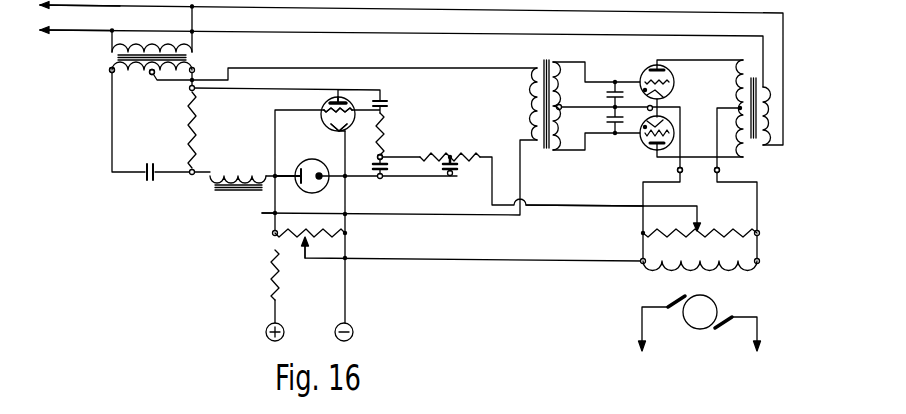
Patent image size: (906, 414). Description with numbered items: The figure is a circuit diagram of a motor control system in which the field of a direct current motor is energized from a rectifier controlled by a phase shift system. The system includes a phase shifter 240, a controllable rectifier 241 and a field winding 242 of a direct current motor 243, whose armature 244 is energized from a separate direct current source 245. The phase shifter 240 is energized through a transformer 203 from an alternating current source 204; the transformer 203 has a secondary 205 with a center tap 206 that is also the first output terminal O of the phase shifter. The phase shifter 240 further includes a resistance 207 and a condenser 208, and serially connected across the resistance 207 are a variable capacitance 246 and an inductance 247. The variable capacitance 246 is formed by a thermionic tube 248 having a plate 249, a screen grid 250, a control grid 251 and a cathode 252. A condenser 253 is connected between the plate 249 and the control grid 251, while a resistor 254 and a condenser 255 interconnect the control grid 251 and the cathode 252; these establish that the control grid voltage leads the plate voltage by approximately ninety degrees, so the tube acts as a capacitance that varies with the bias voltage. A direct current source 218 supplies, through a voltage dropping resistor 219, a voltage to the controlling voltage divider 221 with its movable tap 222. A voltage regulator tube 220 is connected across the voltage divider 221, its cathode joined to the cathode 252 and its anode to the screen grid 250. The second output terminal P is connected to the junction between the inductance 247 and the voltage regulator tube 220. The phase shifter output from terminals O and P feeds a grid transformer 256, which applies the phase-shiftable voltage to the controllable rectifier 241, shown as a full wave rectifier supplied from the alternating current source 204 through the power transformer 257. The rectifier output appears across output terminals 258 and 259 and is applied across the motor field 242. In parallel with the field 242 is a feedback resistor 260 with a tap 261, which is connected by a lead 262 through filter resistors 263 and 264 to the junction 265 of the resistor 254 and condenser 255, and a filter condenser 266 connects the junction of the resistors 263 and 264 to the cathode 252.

The alternating current source 204 is at (77, 18).
The transformer 203 is at (211, 45).
The secondary 205 is at (110, 73).
The center tap 206 is at (152, 74).
The phase shifter 240 is at (152, 89).
The resistance 207 is at (196, 110).
The condenser 208 is at (136, 183).
The inductance 247 is at (232, 193).
The second output terminal P is at (260, 208).
The voltage regulator tube 220 is at (321, 160).
The controlling voltage divider 221 is at (272, 237).
The movable tap 222 is at (302, 250).
The voltage dropping resistor 219 is at (272, 284).
The direct current source 218 is at (336, 322).
The variable capacitance 246 is at (321, 104).
The thermionic tube 248 is at (336, 100).
The plate 249 is at (343, 100).
The screen grid 250 is at (355, 110).
The control grid 251 is at (386, 97).
The condenser 253 is at (386, 107).
The resistor 254 is at (385, 126).
The cathode 252 is at (332, 131).
The junction 265 is at (364, 151).
The condenser 255 is at (371, 182).
The filter resistor 264 is at (437, 152).
The filter resistor 263 is at (470, 152).
The filter condenser 266 is at (458, 179).
The lead 262 is at (575, 205).
The grid transformer 256 is at (546, 61).
The controllable rectifier 241 is at (680, 107).
The power transformer 257 is at (758, 146).
The output terminal 258 is at (677, 170).
The output terminal 259 is at (720, 171).
The tap 261 is at (700, 226).
The feedback resistor 260 is at (722, 233).
The field winding 242 is at (759, 265).
The direct current motor 243 is at (743, 291).
The armature 244 is at (696, 329).
The direct current source 245 is at (645, 346).